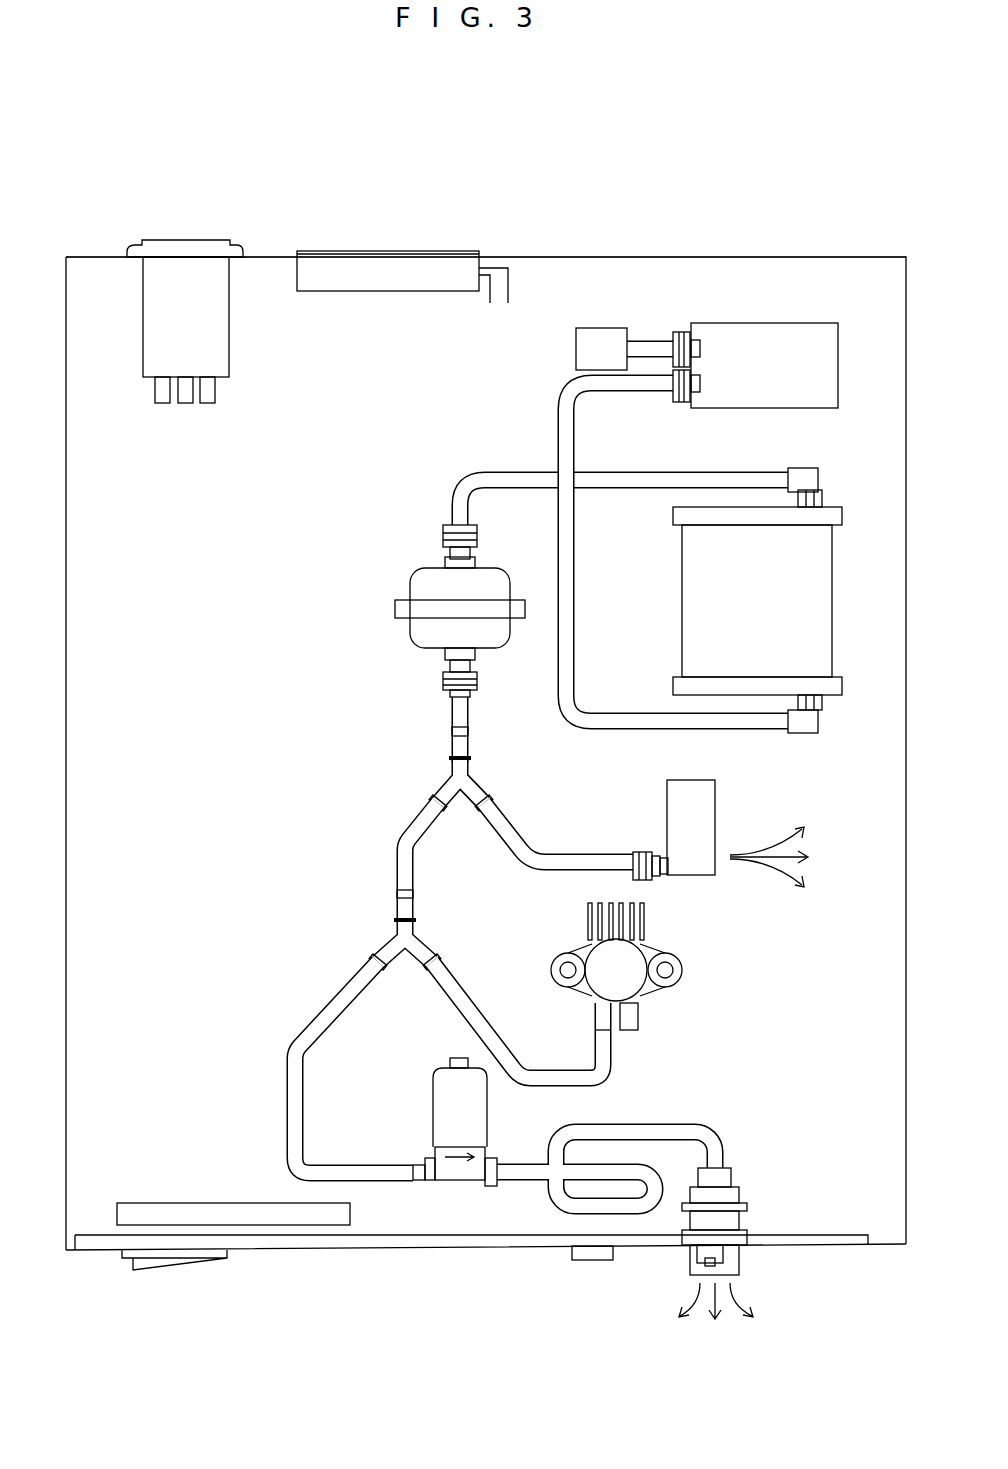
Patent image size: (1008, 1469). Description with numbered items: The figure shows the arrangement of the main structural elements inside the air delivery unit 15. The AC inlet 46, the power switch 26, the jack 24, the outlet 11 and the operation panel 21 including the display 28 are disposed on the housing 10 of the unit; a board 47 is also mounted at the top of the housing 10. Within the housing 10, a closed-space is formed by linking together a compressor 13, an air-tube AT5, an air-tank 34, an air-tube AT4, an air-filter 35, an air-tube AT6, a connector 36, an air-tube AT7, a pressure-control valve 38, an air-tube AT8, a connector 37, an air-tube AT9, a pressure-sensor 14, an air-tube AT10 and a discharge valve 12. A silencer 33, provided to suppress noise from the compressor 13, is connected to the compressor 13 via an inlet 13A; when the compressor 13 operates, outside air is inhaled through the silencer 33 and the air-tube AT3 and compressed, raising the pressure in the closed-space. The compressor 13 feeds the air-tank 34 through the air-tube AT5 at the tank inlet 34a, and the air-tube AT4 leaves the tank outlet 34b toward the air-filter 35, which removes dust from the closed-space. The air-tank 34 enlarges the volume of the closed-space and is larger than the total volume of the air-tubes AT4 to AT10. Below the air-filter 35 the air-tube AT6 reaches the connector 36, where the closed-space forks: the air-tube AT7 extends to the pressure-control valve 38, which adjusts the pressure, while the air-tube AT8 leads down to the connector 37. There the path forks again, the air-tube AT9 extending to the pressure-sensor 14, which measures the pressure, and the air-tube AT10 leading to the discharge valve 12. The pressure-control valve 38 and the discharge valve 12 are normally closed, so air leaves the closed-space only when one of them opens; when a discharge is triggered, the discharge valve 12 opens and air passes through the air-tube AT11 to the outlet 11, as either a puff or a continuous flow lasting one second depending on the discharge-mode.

The housing 10 is at (861, 254).
The air delivery unit 15 is at (713, 240).
The operation panel 21 is at (858, 1236).
The air-tube AT3 is at (651, 342).
The air-tube AT4 is at (510, 480).
The air-tube AT5 is at (570, 560).
The air-tube AT6 is at (452, 712).
The air-tube AT7 is at (580, 860).
The air-tube AT8 is at (417, 825).
The air-tube AT9 is at (598, 1070).
The air-tube AT10 is at (295, 1105).
The air-tube AT11 is at (712, 1134).
The AC inlet 46 is at (186, 240).
The circuit board 47 is at (388, 254).
The silencer 33 is at (576, 348).
The inlet 13A is at (683, 330).
The compressor 13 is at (786, 322).
The air-tank 34 is at (800, 600).
The inlet 34a is at (824, 704).
The outlet 34b is at (830, 493).
The air-filter 35 is at (396, 607).
The connector 36 is at (480, 788).
The connector 37 is at (382, 950).
The pressure-control valve 38 is at (697, 802).
The pressure-sensor 14 is at (682, 968).
The discharge valve 12 is at (450, 1107).
The outlet 11 is at (740, 1262).
The display 28 is at (177, 1215).
The power switch 26 is at (165, 1262).
The jack 24 is at (590, 1262).